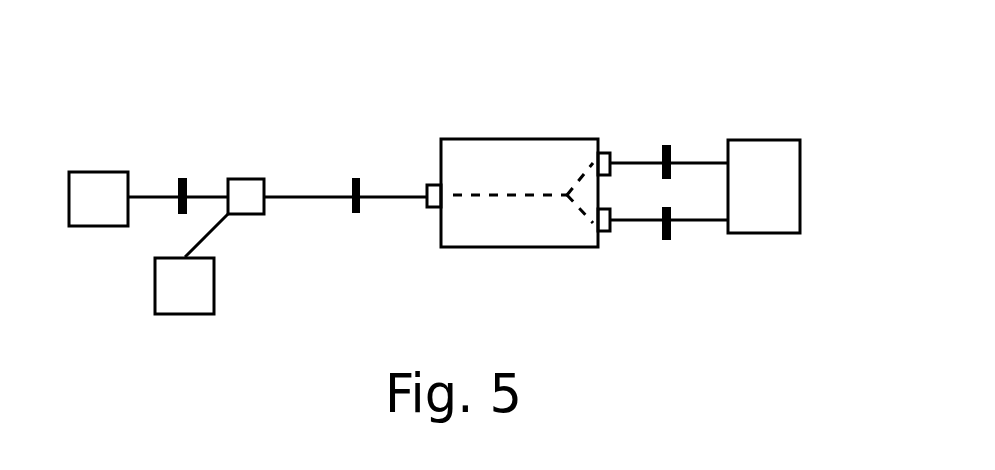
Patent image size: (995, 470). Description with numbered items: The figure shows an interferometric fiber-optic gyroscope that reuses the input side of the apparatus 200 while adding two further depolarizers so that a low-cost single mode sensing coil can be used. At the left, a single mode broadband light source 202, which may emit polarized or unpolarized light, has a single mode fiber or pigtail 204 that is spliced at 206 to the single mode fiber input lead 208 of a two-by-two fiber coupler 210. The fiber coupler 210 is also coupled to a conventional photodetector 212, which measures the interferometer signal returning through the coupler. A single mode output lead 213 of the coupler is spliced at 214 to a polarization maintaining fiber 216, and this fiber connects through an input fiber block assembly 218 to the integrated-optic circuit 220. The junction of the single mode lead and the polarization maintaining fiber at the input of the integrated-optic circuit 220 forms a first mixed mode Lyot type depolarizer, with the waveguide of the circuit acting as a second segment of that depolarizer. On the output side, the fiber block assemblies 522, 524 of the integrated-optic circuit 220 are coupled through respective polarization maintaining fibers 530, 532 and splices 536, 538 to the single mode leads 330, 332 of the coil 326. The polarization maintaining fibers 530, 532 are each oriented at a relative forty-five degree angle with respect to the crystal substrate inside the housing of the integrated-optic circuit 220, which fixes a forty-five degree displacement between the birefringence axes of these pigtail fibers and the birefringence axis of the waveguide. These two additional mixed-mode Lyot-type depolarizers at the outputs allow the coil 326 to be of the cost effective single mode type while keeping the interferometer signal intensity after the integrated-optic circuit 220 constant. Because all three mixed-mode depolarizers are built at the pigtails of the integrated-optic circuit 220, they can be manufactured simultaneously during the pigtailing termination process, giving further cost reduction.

The apparatus 200 is at (455, 34).
The single mode broadband light source 202 is at (95, 172).
The single mode fiber or pigtail 204 is at (140, 197).
The splice 206 is at (183, 177).
The single mode fiber input lead 208 is at (213, 193).
The 2×2 fiber coupler 210 is at (252, 179).
The photodetector 212 is at (183, 315).
The single mode output lead 213 is at (302, 200).
The splice 214 is at (354, 178).
The polarization maintaining fiber 216 is at (410, 200).
The input fiber block assembly 218 is at (427, 184).
The integrated-optic circuit 220 is at (530, 139).
The fiber block assembly 522 is at (604, 153).
The fiber block assembly 524 is at (610, 233).
The polarization maintaining fiber 530 is at (640, 160).
The polarization maintaining fiber 532 is at (630, 222).
The splice 536 is at (667, 145).
The splice 538 is at (662, 242).
The single mode lead 330 is at (698, 163).
The single mode lead 332 is at (713, 222).
The coil 326 is at (737, 140).